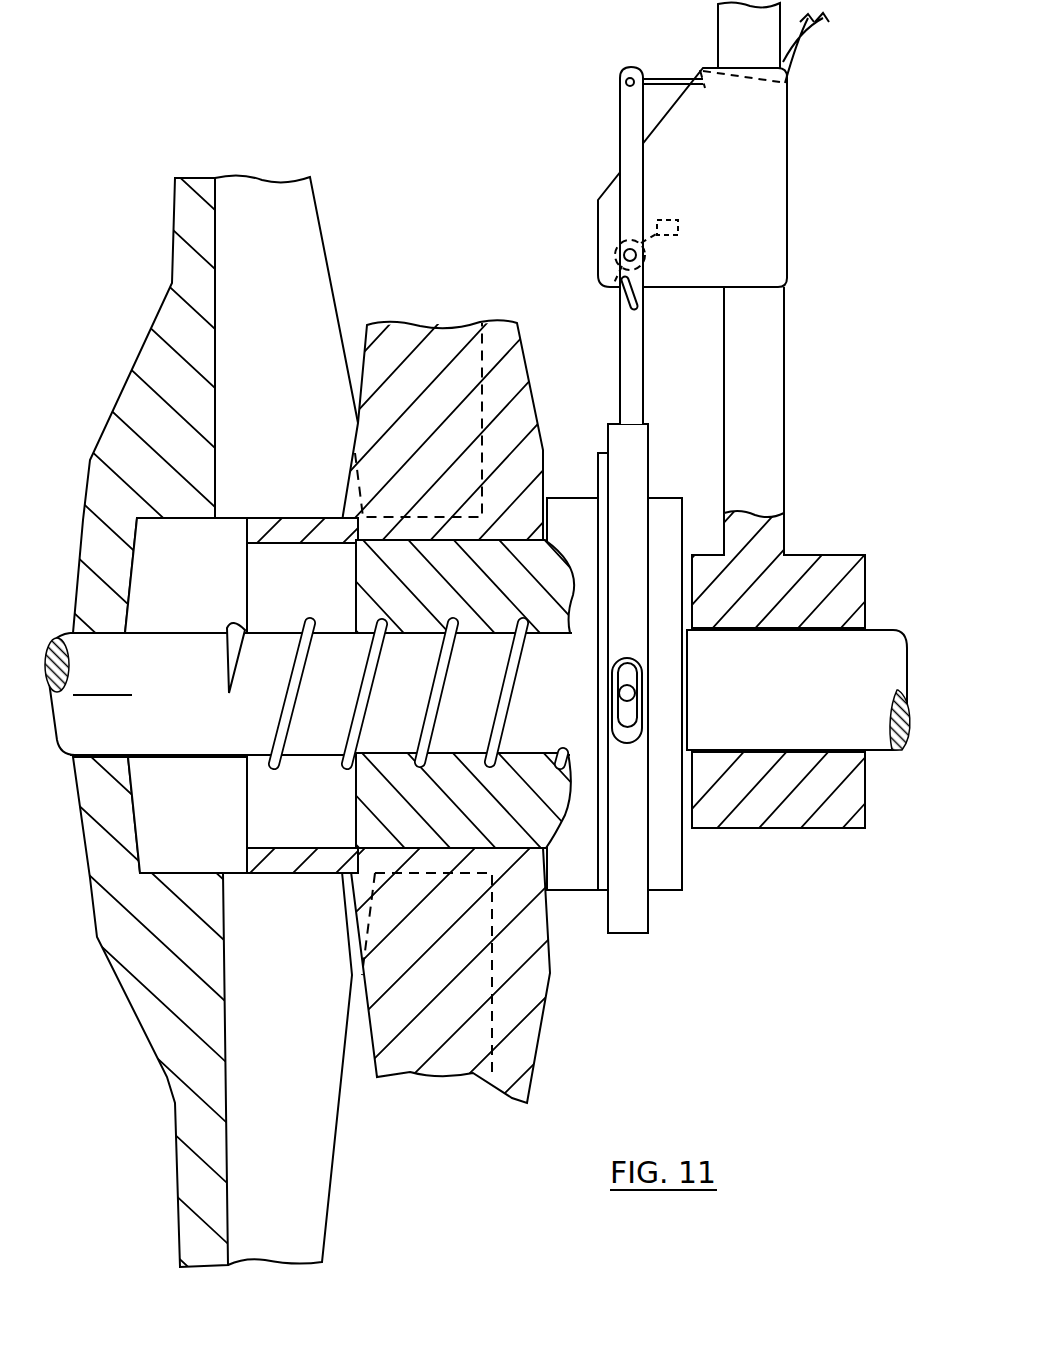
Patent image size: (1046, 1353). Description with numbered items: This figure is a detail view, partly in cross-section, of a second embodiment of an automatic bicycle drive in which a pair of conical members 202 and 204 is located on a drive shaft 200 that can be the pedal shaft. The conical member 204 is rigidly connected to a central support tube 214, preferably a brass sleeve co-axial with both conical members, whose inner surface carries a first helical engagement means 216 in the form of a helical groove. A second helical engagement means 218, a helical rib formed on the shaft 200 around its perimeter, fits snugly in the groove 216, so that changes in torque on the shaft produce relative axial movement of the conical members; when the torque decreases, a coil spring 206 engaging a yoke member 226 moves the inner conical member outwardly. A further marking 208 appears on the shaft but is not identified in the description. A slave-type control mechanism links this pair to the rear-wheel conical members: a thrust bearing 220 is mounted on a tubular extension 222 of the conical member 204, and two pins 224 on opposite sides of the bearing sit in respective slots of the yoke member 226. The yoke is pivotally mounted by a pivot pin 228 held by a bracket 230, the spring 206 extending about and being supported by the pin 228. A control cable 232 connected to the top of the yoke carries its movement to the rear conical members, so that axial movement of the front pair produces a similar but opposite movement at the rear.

The drive shaft 200 is at (211, 713).
The conical member 202 is at (160, 312).
The conical member 204 is at (512, 367).
The coil spring 206 is at (633, 237).
The shaft center line 208 is at (102, 695).
The central support tube 214 is at (375, 797).
The first helical engagement means 216 is at (356, 600).
The second helical engagement means 218 is at (497, 736).
The thrust bearing 220 is at (641, 920).
The tubular extension 222 is at (682, 864).
The pins 224 is at (635, 690).
The yoke member 226 is at (637, 350).
The pivot pin 228 is at (645, 254).
The bracket 230 is at (756, 181).
The control cable 232 is at (826, 55).